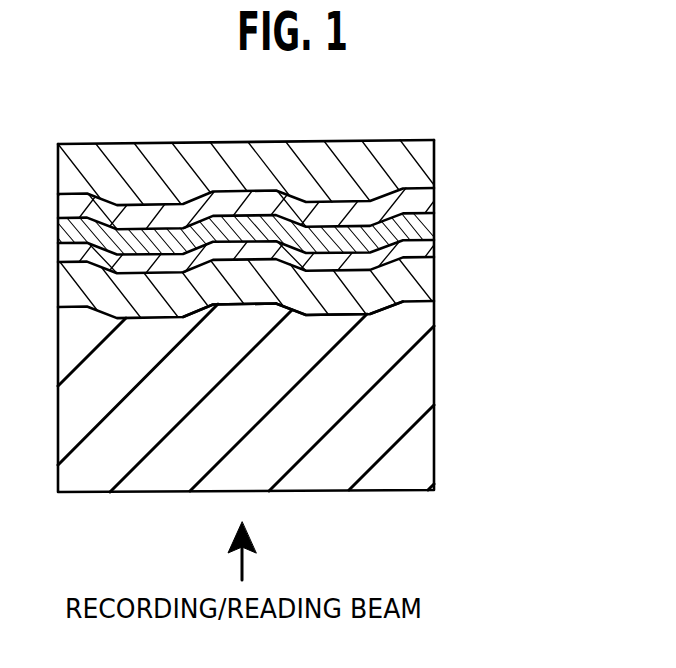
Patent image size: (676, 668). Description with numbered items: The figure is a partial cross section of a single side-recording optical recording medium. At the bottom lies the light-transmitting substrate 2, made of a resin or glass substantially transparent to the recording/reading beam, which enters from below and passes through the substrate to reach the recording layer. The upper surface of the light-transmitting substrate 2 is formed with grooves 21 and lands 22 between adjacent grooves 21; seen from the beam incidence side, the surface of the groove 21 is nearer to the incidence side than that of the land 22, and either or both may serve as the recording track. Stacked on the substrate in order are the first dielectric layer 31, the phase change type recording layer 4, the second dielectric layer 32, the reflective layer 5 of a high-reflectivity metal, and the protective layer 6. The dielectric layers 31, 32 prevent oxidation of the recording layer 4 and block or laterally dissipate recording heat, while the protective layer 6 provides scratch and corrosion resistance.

The light-transmitting substrate 2 is at (430, 388).
The recording layer 4 is at (434, 248).
The reflective layer 5 is at (434, 203).
The protective layer 6 is at (434, 166).
The groove 21 is at (327, 318).
The land 22 is at (245, 307).
The first dielectric layer 31 is at (430, 284).
The second dielectric layer 32 is at (434, 222).